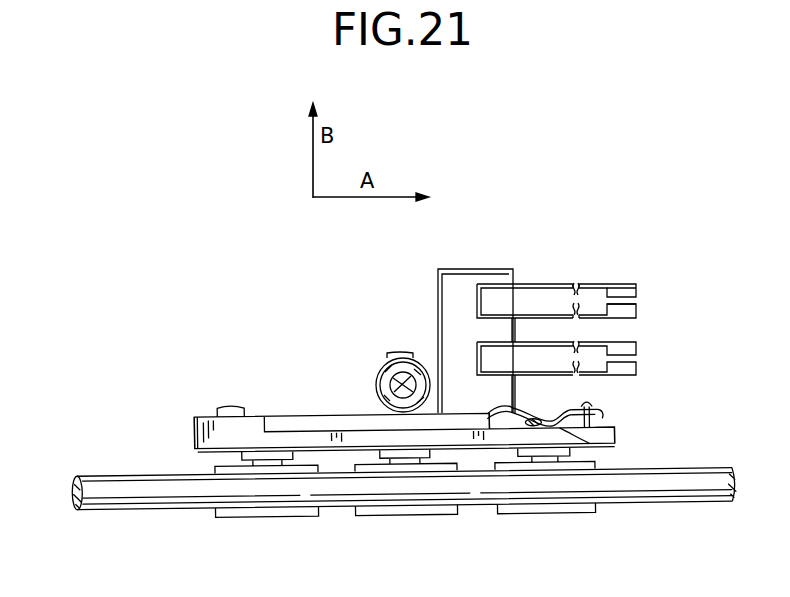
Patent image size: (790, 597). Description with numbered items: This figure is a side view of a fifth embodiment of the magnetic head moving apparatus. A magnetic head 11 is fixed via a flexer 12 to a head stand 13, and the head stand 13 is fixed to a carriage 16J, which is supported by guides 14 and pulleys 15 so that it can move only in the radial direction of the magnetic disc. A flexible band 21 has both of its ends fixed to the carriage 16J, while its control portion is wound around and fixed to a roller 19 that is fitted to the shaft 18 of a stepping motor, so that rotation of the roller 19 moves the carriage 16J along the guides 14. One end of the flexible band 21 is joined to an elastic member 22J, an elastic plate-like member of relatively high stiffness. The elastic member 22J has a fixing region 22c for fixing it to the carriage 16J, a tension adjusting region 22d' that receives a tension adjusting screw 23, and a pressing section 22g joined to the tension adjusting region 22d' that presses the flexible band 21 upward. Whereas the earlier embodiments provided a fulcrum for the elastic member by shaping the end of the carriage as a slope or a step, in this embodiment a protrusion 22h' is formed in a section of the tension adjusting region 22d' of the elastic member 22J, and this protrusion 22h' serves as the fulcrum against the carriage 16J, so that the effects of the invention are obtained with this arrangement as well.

The magnetic head 11 is at (636, 285).
The flexer 12 is at (542, 283).
The head stand 13 is at (452, 290).
The guide 14 is at (132, 487).
The pulley 15 is at (537, 515).
The carriage 16J is at (195, 433).
The shaft 18 is at (383, 390).
The roller 19 is at (388, 390).
The flexible band 21 is at (290, 414).
The elastic member 22J is at (586, 404).
The pressing section 22g is at (516, 397).
The tension adjusting region 22d' is at (632, 417).
The protrusion 22h' is at (645, 441).
The fixing region 22c is at (580, 440).
The tension adjusting screw 23 is at (598, 407).